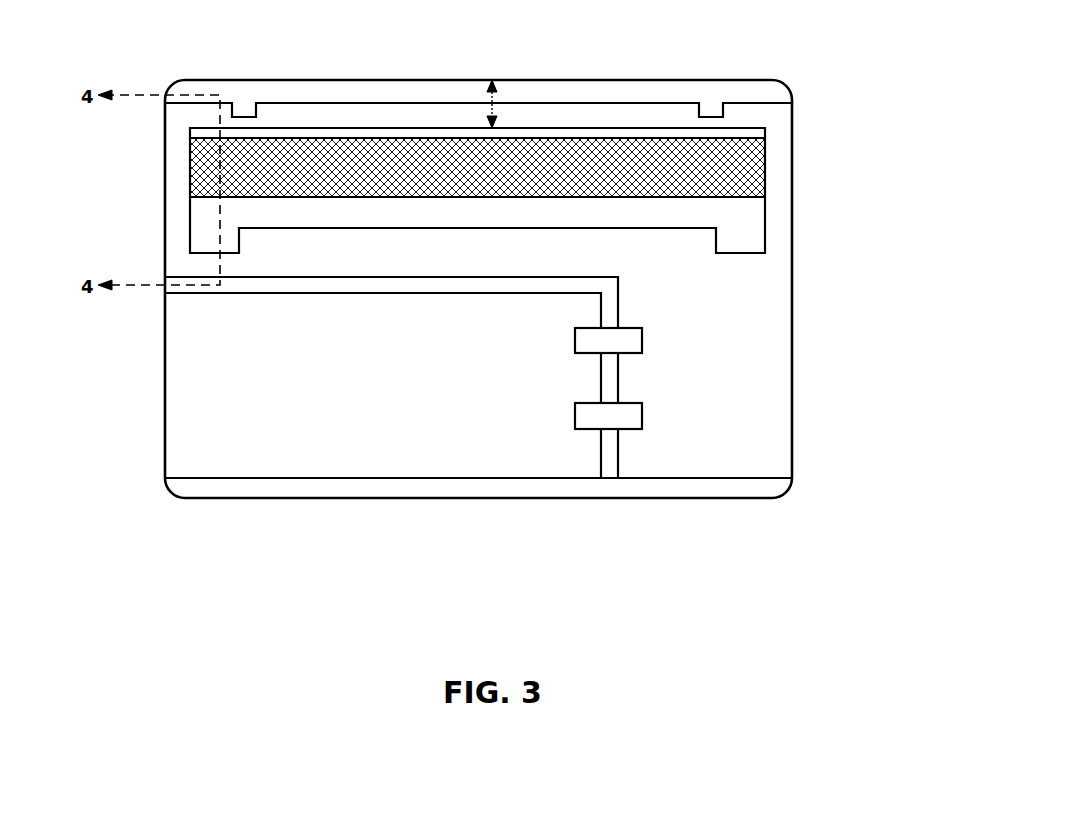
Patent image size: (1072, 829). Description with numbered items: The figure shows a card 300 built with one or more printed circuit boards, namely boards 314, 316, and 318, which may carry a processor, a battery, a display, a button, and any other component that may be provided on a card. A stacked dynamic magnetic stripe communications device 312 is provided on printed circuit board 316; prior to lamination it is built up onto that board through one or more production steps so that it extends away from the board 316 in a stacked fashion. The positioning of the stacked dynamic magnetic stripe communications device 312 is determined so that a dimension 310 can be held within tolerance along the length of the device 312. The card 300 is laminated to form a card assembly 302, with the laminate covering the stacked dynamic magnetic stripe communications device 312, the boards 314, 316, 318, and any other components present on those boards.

The card 300 is at (612, 289).
The card assembly 302 is at (425, 80).
The dimension 310 is at (492, 100).
The stacked dynamic magnetic stripe communications device 312 is at (470, 200).
The printed circuit board 314 is at (782, 384).
The printed circuit board 316 is at (445, 133).
The printed circuit board 318 is at (172, 362).